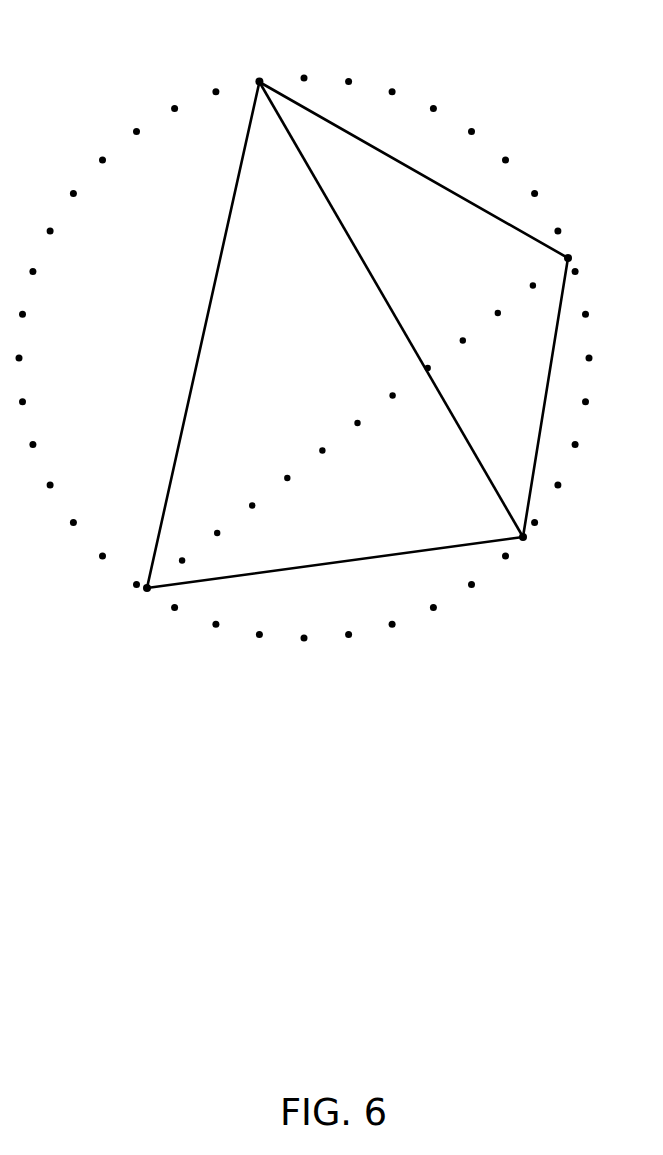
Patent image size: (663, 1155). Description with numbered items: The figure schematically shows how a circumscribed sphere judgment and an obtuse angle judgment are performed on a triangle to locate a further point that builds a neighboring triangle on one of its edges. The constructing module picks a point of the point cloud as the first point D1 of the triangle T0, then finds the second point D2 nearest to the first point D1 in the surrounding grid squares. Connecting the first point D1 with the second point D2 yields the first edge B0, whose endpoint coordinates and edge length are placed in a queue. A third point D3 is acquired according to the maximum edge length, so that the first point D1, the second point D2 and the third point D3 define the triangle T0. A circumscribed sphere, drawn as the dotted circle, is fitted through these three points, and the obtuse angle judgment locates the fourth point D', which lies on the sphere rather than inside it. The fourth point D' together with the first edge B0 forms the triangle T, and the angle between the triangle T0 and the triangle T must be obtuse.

The first point D1 is at (253, 52).
The second point D2 is at (559, 559).
The third point D3 is at (120, 616).
The fourth point D' is at (600, 249).
The triangle constructed by the fourth point and the first edge T is at (410, 217).
The triangle T0 is at (248, 319).
The first edge B0 is at (391, 309).